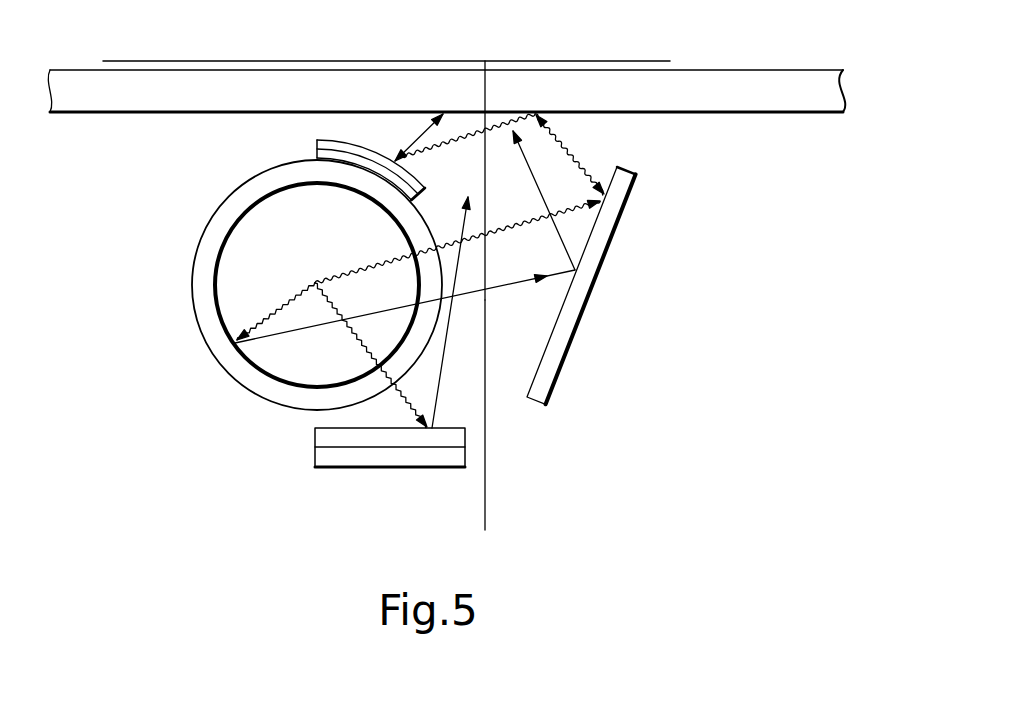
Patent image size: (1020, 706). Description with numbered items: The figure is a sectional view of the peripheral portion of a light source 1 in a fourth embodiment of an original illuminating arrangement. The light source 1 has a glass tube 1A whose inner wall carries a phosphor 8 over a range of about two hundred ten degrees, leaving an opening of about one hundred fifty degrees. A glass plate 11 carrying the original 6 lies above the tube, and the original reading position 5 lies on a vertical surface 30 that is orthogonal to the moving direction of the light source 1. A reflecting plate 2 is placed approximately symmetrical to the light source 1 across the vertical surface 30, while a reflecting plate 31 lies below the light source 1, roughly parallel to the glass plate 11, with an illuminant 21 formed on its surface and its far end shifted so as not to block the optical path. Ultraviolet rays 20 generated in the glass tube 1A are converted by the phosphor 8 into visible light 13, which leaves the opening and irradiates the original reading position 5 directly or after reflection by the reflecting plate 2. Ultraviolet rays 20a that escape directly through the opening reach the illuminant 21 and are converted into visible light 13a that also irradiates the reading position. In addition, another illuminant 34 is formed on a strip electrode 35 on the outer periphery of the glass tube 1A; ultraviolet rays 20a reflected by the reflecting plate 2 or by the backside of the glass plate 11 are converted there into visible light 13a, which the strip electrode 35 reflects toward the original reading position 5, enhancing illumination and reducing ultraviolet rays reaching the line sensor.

The light source 1 is at (263, 285).
The glass tube 1A is at (203, 235).
The reflecting plate 2 is at (557, 357).
The original reading position 5 is at (490, 63).
The original 6 is at (220, 59).
The phosphor 8 is at (212, 330).
The glass plate 11 is at (757, 78).
The visible light 13 is at (513, 287).
The visible light 13a is at (413, 137).
The ultraviolet rays 20 is at (278, 308).
The ultraviolet rays 20a is at (592, 209).
The illuminant 21 is at (315, 433).
The vertical surface 30 is at (485, 490).
The reflecting plate 31 is at (348, 468).
The illuminant 34 is at (353, 141).
The strip electrode 35 is at (316, 151).